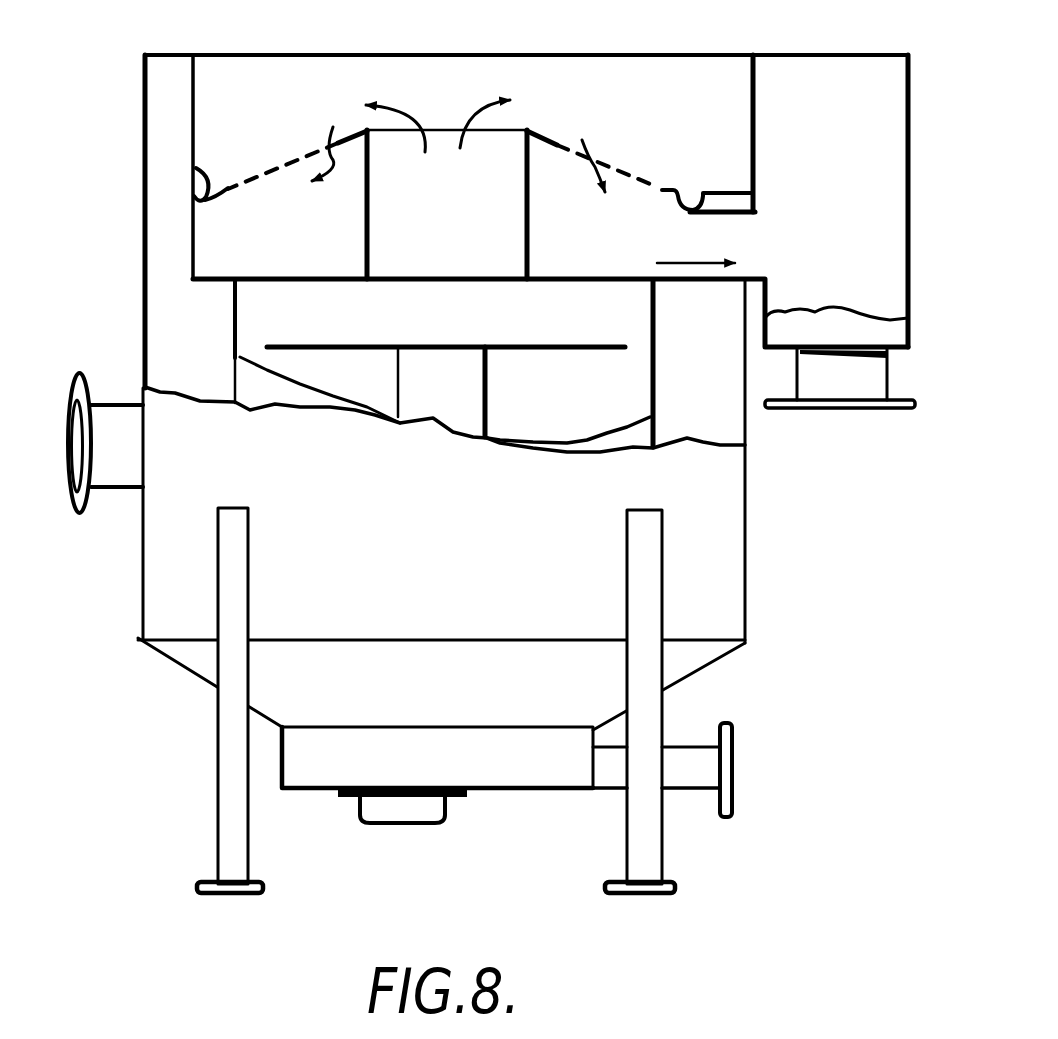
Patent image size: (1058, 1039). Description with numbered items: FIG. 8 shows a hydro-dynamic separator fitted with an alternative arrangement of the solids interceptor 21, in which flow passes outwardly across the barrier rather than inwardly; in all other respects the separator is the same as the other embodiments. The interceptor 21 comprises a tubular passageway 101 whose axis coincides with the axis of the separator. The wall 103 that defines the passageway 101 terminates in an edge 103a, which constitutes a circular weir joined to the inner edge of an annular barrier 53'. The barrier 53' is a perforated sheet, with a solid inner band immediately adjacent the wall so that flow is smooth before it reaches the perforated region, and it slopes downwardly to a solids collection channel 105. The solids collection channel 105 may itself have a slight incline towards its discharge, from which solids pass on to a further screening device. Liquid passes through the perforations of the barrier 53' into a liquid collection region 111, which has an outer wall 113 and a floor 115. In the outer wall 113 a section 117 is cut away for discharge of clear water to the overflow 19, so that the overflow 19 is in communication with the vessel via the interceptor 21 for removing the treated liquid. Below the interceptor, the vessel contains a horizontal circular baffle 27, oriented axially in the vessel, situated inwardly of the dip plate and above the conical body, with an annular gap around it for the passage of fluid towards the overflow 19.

The overflow 19 is at (853, 177).
The interceptor 21 is at (278, 145).
The horizontal circular baffle 27 is at (275, 342).
The annular barrier 53' is at (684, 132).
The tubular passageway 101 is at (487, 175).
The wall 103 is at (366, 233).
The edge 103a is at (367, 130).
The solids collection channel 105 is at (196, 168).
The liquid collection region 111 is at (277, 210).
The outer wall 113 is at (192, 262).
The floor 115 is at (290, 283).
The section 117 is at (753, 238).